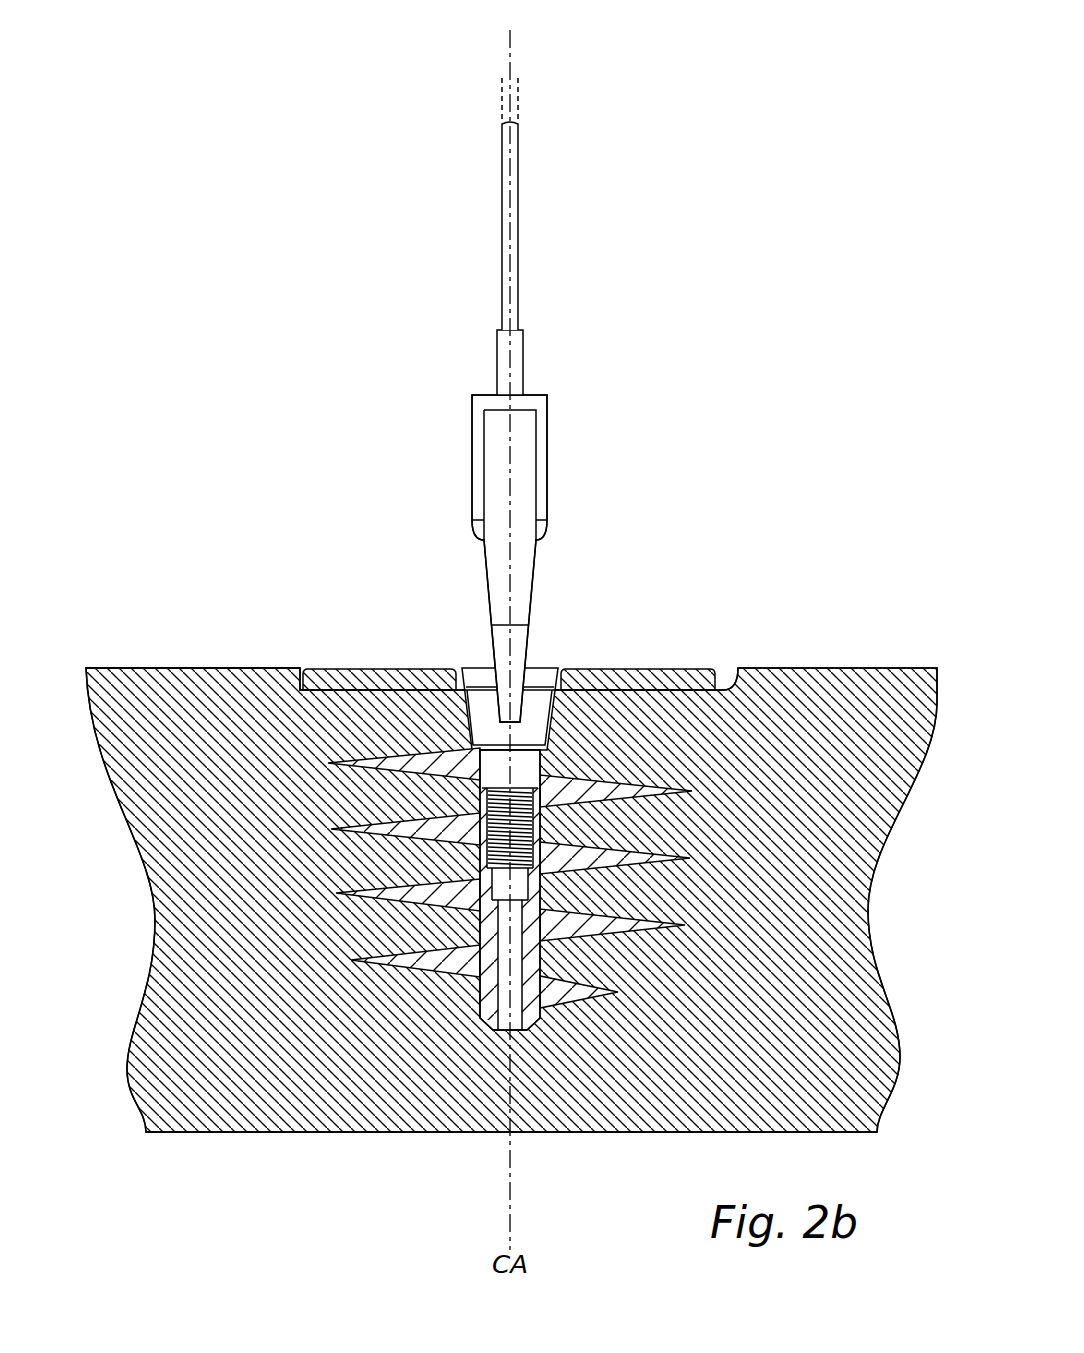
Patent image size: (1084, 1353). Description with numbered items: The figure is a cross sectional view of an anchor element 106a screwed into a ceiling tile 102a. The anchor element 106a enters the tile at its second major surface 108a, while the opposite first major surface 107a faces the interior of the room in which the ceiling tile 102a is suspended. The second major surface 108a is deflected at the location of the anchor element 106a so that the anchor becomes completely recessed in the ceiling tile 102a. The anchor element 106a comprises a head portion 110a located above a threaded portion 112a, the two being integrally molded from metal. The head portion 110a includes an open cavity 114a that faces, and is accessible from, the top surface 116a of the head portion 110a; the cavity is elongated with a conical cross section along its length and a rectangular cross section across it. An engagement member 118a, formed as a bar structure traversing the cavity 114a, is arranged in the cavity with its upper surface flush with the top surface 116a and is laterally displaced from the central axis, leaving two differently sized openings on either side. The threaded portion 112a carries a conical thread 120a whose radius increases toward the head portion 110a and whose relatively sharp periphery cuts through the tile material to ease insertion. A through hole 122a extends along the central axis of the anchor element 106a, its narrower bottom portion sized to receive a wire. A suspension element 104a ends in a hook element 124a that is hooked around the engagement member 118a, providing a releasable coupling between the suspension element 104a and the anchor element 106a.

The ceiling tile 102a is at (511, 910).
The suspension element 104a is at (518, 219).
The anchor element 106a is at (712, 834).
The first major surface 107a is at (227, 1132).
The second major surface 108a is at (195, 668).
The head portion 110a is at (419, 874).
The threaded portion 112a is at (375, 965).
The cavity 114a is at (530, 735).
The top surface 116a is at (380, 668).
The engagement member 118a is at (571, 671).
The thread 120a is at (365, 962).
The through hole 122a is at (327, 924).
The hook element 124a is at (547, 453).